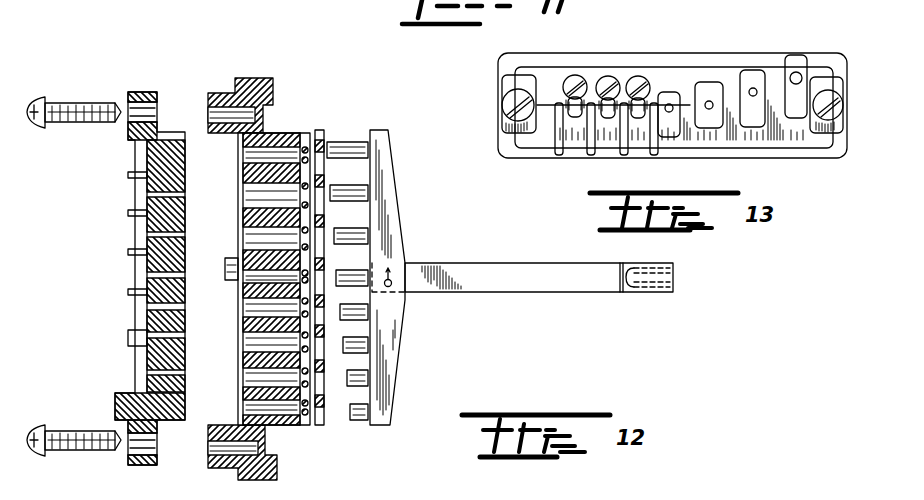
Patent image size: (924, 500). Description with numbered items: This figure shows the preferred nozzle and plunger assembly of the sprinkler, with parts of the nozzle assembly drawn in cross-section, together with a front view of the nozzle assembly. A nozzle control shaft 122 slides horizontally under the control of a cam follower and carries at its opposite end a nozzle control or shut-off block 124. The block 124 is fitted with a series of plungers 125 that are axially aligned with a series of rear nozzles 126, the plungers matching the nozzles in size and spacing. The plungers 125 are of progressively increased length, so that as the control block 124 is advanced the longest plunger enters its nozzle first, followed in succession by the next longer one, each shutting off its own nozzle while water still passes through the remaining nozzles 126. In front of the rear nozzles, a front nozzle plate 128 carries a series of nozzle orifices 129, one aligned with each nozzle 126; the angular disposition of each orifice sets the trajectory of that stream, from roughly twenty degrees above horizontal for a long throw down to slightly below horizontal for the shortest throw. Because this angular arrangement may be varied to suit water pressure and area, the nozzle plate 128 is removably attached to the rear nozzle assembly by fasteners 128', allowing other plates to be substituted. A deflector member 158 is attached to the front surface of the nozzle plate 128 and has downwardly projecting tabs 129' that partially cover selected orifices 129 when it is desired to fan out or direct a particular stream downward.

In FIG. 12, the nozzle control shaft 122 is at (460, 264).
In FIG. 12, the nozzle control block 124 is at (400, 196).
In FIG. 12, the plungers 125 is at (350, 140).
In FIG. 12, the rear nozzles 126 is at (282, 132).
In FIG. 12, the front nozzle plate 128 is at (121, 278).
In FIG. 13, the front nozzle plate 128 is at (742, 67).
In FIG. 12, the fasteners 128' is at (75, 276).
In FIG. 12, the nozzle orifices 129 is at (123, 263).
In FIG. 13, the nozzle orifices 129 is at (822, 63).
In FIG. 13, the downwardly projecting tabs 129' is at (605, 130).
In FIG. 13, the deflector member 158 is at (679, 95).